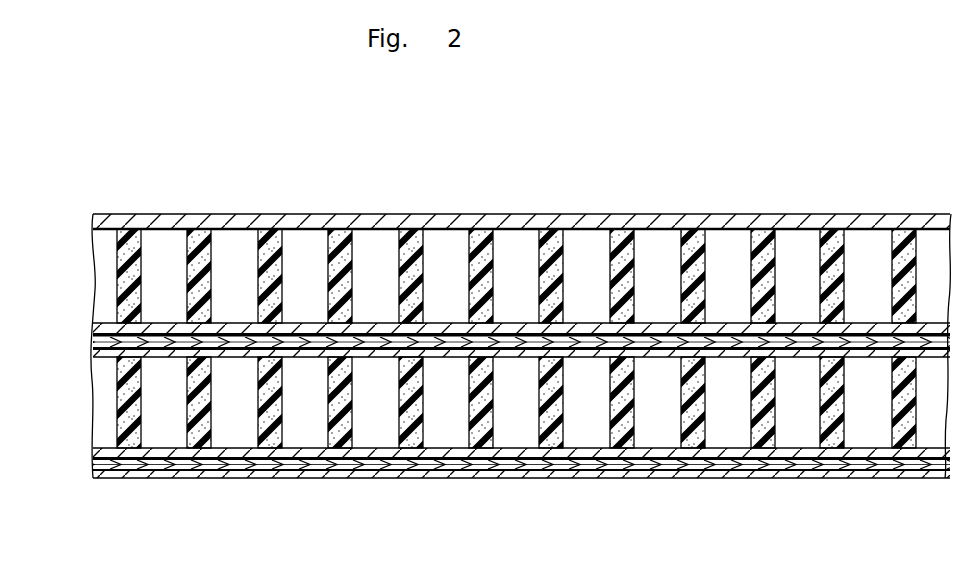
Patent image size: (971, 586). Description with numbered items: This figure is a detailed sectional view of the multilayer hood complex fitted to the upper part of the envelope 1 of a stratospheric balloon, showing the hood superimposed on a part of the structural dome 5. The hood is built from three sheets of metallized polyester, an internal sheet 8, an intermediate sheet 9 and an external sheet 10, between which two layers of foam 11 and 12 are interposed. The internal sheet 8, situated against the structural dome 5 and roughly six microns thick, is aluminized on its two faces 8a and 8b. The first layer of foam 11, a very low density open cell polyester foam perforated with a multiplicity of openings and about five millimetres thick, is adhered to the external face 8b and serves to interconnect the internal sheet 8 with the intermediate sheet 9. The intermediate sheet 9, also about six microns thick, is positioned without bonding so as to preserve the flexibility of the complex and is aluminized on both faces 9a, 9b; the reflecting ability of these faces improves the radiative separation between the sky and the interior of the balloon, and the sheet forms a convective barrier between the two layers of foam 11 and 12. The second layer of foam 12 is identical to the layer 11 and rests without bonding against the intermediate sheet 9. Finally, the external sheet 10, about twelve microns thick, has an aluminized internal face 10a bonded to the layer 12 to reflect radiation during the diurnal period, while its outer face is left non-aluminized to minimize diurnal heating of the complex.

The envelope 1 is at (438, 478).
The structural dome 5 is at (488, 468).
The internal sheet 8 is at (521, 476).
The face of sheet 8 8a is at (373, 470).
The external face of sheet 8 8b is at (375, 458).
The intermediate sheet 9 is at (521, 281).
The face of intermediate sheet 9a is at (423, 346).
The face of intermediate sheet 9b is at (505, 338).
The external sheet 10 is at (521, 172).
The aluminized internal face 10a is at (305, 219).
The layer of foam 11 is at (185, 428).
The layer of foam 12 is at (139, 277).